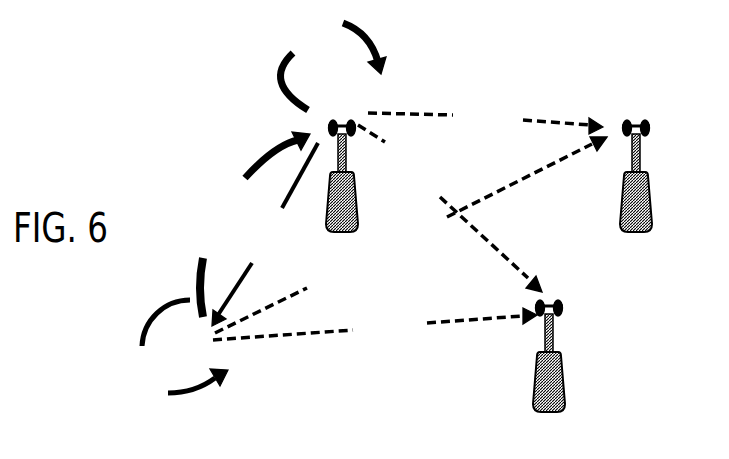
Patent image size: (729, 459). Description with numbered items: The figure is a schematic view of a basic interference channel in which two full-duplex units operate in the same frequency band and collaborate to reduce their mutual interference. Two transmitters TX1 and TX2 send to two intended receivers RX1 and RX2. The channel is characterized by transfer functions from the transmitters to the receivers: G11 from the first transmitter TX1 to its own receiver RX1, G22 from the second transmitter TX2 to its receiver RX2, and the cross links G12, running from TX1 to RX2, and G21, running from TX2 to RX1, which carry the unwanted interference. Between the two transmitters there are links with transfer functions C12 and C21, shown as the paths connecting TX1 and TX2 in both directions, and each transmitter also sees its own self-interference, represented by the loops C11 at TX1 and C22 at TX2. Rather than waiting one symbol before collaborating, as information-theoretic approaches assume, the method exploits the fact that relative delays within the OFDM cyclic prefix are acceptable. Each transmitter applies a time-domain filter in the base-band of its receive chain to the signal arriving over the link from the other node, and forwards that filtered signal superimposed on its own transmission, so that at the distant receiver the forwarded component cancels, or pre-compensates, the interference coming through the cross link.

The transmitter TX1 is at (330, 148).
The transmitter TX2 is at (240, 440).
The receiver RX1 is at (664, 178).
The receiver RX2 is at (578, 358).
The self-interference transfer function C11 is at (333, 59).
The inter-transmitter link transfer function C12 is at (265, 234).
The inter-transmitter link transfer function C21 is at (249, 224).
The self-interference transfer function C22 is at (169, 349).
The transmitter-to-receiver transfer function G11 is at (485, 112).
The transmitter-to-receiver transfer function G12 is at (450, 208).
The transmitter-to-receiver transfer function G21 is at (411, 235).
The transmitter-to-receiver transfer function G22 is at (375, 328).